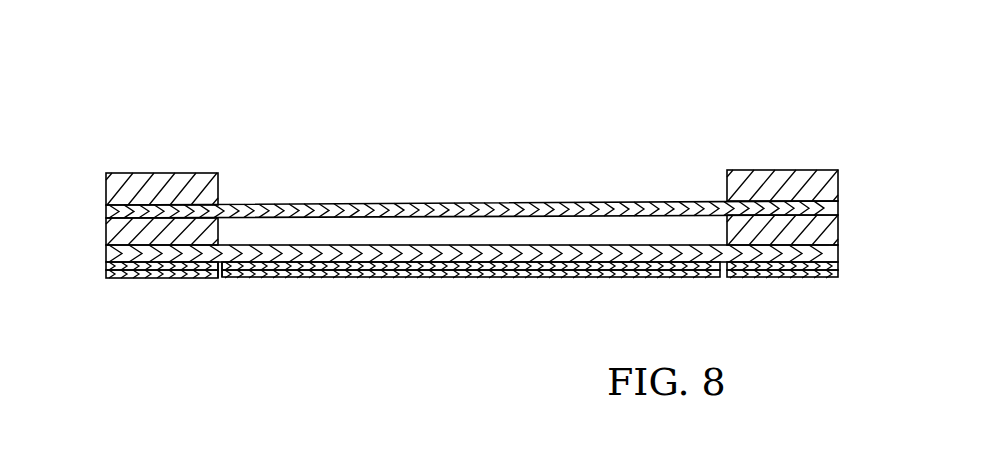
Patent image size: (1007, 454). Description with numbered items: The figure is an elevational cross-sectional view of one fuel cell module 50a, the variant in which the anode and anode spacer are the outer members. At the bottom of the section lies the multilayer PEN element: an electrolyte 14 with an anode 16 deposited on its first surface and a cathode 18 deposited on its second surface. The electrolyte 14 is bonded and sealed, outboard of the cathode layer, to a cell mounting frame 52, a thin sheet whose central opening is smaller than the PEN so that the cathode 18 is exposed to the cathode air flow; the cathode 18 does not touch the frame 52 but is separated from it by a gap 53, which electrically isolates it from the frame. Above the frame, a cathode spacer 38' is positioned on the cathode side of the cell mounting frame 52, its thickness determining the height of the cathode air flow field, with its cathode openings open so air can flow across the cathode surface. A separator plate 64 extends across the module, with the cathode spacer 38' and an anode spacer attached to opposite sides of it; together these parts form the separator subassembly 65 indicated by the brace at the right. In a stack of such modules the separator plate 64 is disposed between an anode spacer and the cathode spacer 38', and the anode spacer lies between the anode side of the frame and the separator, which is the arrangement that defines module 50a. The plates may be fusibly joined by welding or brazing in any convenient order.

The electrolyte 14 is at (108, 266).
The anode 16 is at (105, 252).
The cathode 18 is at (447, 278).
The cathode spacer 38' is at (162, 142).
The fuel cell module 50a is at (507, 152).
The cell mounting frame 52 is at (162, 280).
The gap 53 is at (218, 280).
The separator plate 64 is at (284, 204).
The separator subassembly 65 is at (842, 170).